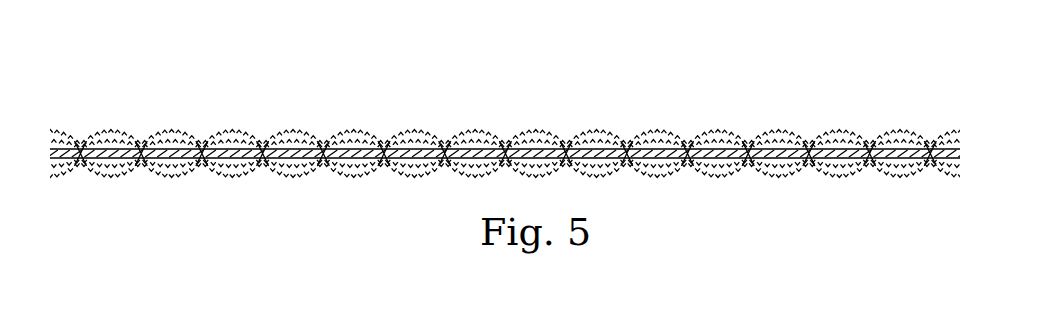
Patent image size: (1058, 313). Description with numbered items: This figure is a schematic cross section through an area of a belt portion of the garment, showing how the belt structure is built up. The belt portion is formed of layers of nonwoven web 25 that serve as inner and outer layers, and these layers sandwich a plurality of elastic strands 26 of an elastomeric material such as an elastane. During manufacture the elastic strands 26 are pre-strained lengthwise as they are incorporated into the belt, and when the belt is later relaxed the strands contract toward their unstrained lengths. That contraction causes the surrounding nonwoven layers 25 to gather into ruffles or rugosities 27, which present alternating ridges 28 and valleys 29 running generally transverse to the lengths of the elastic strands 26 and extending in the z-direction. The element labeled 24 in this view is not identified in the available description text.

The upper nonwoven layer 24 is at (287, 141).
The layers of nonwoven web 25 is at (298, 170).
The strands of elastomeric material 26 is at (47, 150).
The rugosities 27 is at (842, 88).
The ridges 28 is at (600, 131).
The valleys 29 is at (752, 143).